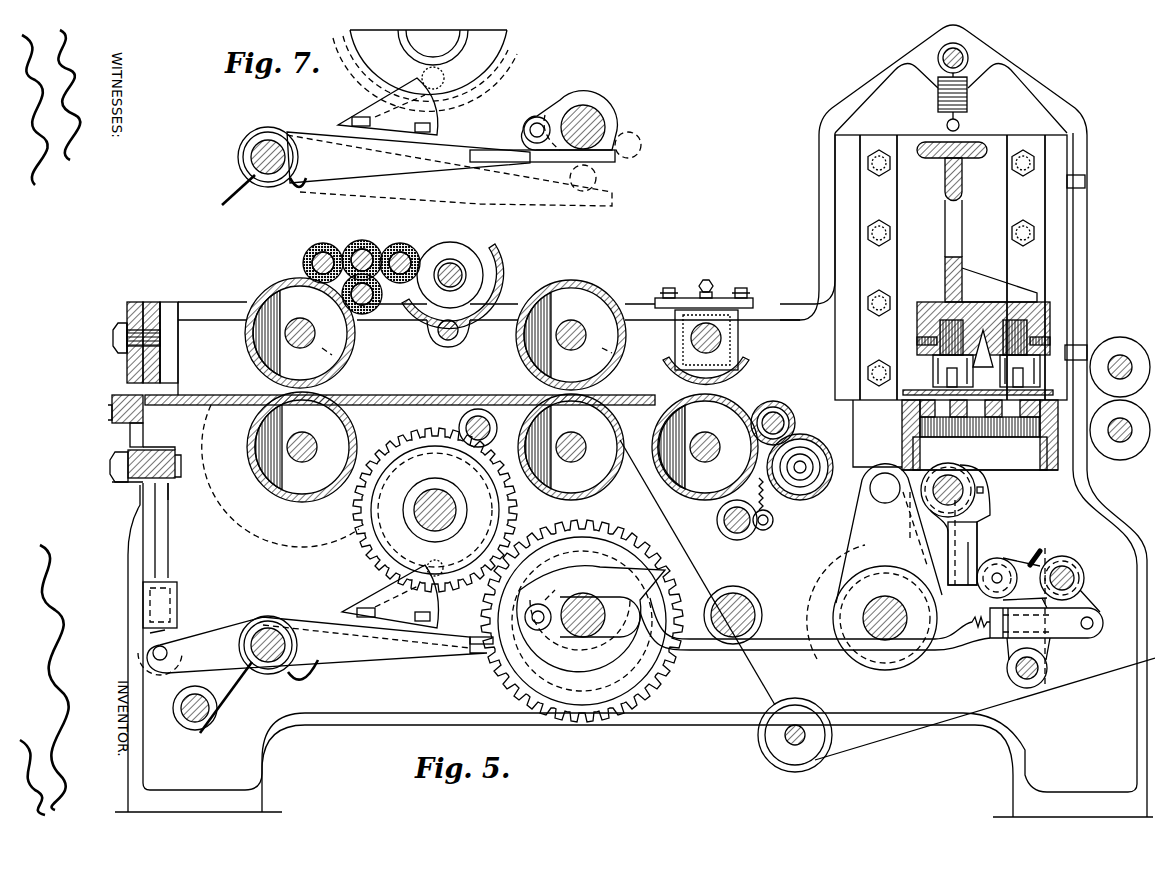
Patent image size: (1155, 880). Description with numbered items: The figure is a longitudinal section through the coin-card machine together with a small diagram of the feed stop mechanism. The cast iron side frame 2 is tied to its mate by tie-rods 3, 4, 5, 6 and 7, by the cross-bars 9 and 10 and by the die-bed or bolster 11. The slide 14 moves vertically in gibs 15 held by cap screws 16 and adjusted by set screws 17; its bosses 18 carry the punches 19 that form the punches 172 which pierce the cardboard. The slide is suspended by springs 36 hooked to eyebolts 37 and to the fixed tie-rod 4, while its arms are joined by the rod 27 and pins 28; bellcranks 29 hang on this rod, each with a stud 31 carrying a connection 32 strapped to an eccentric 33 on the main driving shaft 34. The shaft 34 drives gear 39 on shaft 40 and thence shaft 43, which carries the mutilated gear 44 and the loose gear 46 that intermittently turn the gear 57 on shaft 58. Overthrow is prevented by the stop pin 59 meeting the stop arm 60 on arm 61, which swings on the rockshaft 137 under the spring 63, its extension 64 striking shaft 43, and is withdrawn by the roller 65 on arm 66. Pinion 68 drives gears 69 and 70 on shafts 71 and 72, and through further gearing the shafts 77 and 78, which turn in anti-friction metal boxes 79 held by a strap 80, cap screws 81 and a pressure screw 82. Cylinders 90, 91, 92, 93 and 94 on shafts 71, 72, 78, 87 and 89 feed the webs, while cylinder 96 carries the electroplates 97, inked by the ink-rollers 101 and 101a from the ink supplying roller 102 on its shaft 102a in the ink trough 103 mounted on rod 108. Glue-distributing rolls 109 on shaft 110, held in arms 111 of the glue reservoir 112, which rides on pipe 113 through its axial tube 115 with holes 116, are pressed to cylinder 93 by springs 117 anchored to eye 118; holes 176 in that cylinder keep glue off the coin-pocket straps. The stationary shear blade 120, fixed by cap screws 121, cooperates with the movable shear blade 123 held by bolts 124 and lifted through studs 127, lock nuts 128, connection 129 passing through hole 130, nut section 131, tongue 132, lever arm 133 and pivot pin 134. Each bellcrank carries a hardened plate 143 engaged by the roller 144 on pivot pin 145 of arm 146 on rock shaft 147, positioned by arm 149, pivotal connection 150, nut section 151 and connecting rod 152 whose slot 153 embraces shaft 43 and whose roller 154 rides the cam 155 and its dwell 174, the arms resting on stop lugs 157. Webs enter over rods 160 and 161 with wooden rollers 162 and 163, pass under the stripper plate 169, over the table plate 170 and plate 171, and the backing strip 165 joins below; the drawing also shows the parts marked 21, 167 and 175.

In FIG. 5, the side frame 2 is at (634, 421).
In FIG. 5, the tie-rod 3 is at (1043, 667).
In FIG. 5, the tie-rod 4 is at (966, 52).
In FIG. 5, the tie-rod 5 is at (730, 536).
In FIG. 5, the tie-rod 6 is at (492, 420).
In FIG. 5, the tie-rod 7 is at (178, 716).
In FIG. 5, the cross-bar 9 is at (160, 302).
In FIG. 5, the cross-bar 10 is at (135, 487).
In FIG. 5, the die-bed or bolster 11 is at (965, 443).
In FIG. 5, the slide 14 is at (952, 267).
In FIG. 5, the gibs 15 is at (952, 267).
In FIG. 5, the cap screws 16 is at (879, 246).
In FIG. 5, the set screws 17 is at (1085, 180).
In FIG. 5, the bosses 18 is at (983, 313).
In FIG. 5, the punch 19 is at (1003, 322).
In FIG. 5, the cam 21 is at (902, 409).
In FIG. 5, the rod 27 is at (964, 488).
In FIG. 5, the pins 28 is at (984, 491).
In FIG. 5, the bellcranks 29 is at (975, 516).
In FIG. 5, the stud 31 is at (885, 488).
In FIG. 5, the connection 32 is at (889, 533).
In FIG. 5, the eccentric 33 is at (885, 618).
In FIG. 5, the main driving shaft 34 is at (898, 610).
In FIG. 5, the springs 36 is at (938, 98).
In FIG. 5, the eyebolts 37 is at (960, 124).
In FIG. 5, the gear 39 is at (848, 530).
In FIG. 5, the shaft 40 is at (760, 612).
In FIG. 7, the shaft 43 is at (600, 120).
In FIG. 5, the shaft 43 is at (588, 600).
In FIG. 5, the mutilated gear 44 is at (675, 665).
In FIG. 5, the loose mutilated gear 46 is at (548, 530).
In FIG. 7, the gear 57 is at (425, 70).
In FIG. 5, the gear 57 is at (424, 444).
In FIG. 5, the shaft 58 is at (440, 498).
In FIG. 7, the stop pin 59 is at (445, 76).
In FIG. 5, the stop pin 59 is at (428, 565).
In FIG. 7, the stop arm 60 is at (388, 106).
In FIG. 5, the stop arm 60 is at (390, 596).
In FIG. 7, the arm 61 is at (449, 169).
In FIG. 5, the arm 61 is at (380, 649).
In FIG. 7, the spring 63 is at (234, 185).
In FIG. 5, the spring 63 is at (240, 660).
In FIG. 7, the extension 64 is at (560, 162).
In FIG. 7, the roller 65 is at (535, 117).
In FIG. 7, the arm 66 is at (553, 112).
In FIG. 5, the pinion 68 is at (372, 545).
In FIG. 5, the gear 69 is at (280, 482).
In FIG. 5, the gear 70 is at (500, 385).
In FIG. 5, the shaft 71 is at (310, 443).
In FIG. 5, the shaft 72 is at (578, 438).
In FIG. 5, the shaft 77 is at (306, 326).
In FIG. 5, the shaft 78 is at (577, 326).
In FIG. 5, the anti-friction metal boxes 79 is at (722, 348).
In FIG. 5, the strap 80 is at (753, 300).
In FIG. 5, the cap screws 81 is at (667, 288).
In FIG. 5, the cap screw 82 is at (706, 279).
In FIG. 5, the shaft 87 is at (711, 440).
In FIG. 5, the shaft 89 is at (654, 340).
In FIG. 5, the cylinder 90 is at (278, 493).
In FIG. 5, the cylinder 91 is at (607, 478).
In FIG. 5, the cylinder 92 is at (623, 352).
In FIG. 5, the cylinder 93 is at (660, 430).
In FIG. 5, the cylinder 94 is at (752, 359).
In FIG. 5, the cylinder 96 is at (327, 353).
In FIG. 5, the electroplates 97 is at (245, 334).
In FIG. 5, the ink-rollers 101 is at (312, 250).
In FIG. 5, the ink roller 101a is at (365, 240).
In FIG. 5, the ink supplying roller 102 is at (450, 240).
In FIG. 5, the shaft 102a is at (455, 268).
In FIG. 5, the ink trough 103 is at (490, 262).
In FIG. 5, the rod 108 is at (444, 340).
In FIG. 5, the glue-distributing rolls 109 is at (770, 412).
In FIG. 5, the shaft 110 is at (780, 418).
In FIG. 5, the arms 111 is at (805, 436).
In FIG. 5, the glue reservoir 112 is at (802, 500).
In FIG. 5, the pipe 113 is at (812, 455).
In FIG. 5, the axial tube 115 is at (814, 471).
In FIG. 5, the holes 116 is at (818, 492).
In FIG. 5, the springs 117 is at (760, 493).
In FIG. 5, the eye 118 is at (766, 530).
In FIG. 5, the stationary shear blade 120 is at (136, 365).
In FIG. 5, the cap screws 121 is at (118, 345).
In FIG. 5, the movable shear blade 123 is at (118, 405).
In FIG. 5, the large headed bolts 124 is at (118, 420).
In FIG. 5, the studs 127 is at (175, 483).
In FIG. 5, the lock nuts 128 is at (112, 466).
In FIG. 5, the connection 129 is at (168, 537).
In FIG. 5, the hole 130 is at (143, 433).
In FIG. 5, the square nut section 131 is at (172, 605).
In FIG. 5, the tongue 132 is at (150, 633).
In FIG. 5, the lever arm 133 is at (238, 625).
In FIG. 5, the pivot pin 134 is at (160, 660).
In FIG. 7, the rockshaft 137 is at (266, 140).
In FIG. 5, the rockshaft 137 is at (268, 662).
In FIG. 5, the hardened plate 143 is at (975, 550).
In FIG. 5, the roller 144 is at (1022, 556).
In FIG. 5, the pivot pin 145 is at (992, 585).
In FIG. 5, the arm 146 is at (1060, 562).
In FIG. 5, the rock shaft 147 is at (1075, 575).
In FIG. 5, the arm 149 is at (1084, 592).
In FIG. 5, the pivotal connection 150 is at (1093, 620).
In FIG. 5, the square nut section 151 is at (1070, 638).
In FIG. 5, the connecting rod 152 is at (797, 650).
In FIG. 5, the elongated slot 153 is at (600, 617).
In FIG. 5, the roller 154 is at (536, 608).
In FIG. 5, the cam 155 is at (580, 563).
In FIG. 5, the stop lugs 157 is at (1008, 650).
In FIG. 5, the rod 160 is at (1120, 367).
In FIG. 5, the rod 161 is at (1120, 430).
In FIG. 5, the wooden rollers 162 is at (1119, 374).
In FIG. 5, the wooden rollers 163 is at (1119, 438).
In FIG. 5, the backing strip 165 is at (702, 560).
In FIG. 5, the pulley 167 is at (812, 720).
In FIG. 5, the stripper plate 169 is at (913, 390).
In FIG. 5, the table plate 170 is at (440, 388).
In FIG. 5, the plate 171 is at (190, 395).
In FIG. 5, the punches 172 is at (1024, 371).
In FIG. 5, the dwell 174 is at (560, 592).
In FIG. 5, the path 175 is at (942, 550).
In FIG. 5, the holes 176 is at (665, 405).